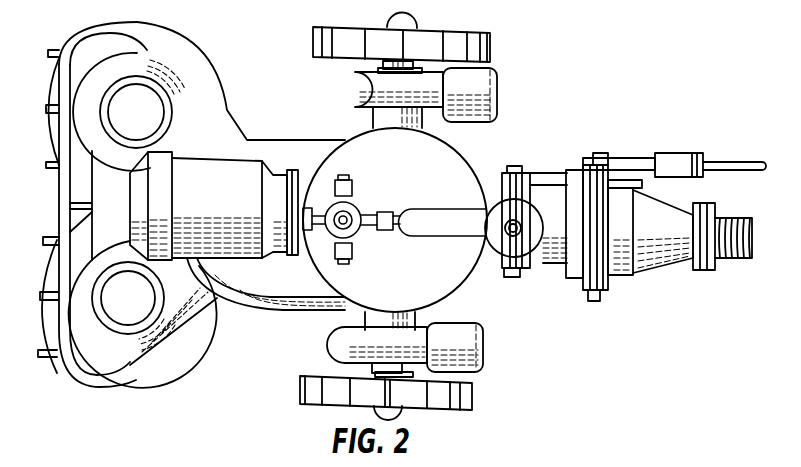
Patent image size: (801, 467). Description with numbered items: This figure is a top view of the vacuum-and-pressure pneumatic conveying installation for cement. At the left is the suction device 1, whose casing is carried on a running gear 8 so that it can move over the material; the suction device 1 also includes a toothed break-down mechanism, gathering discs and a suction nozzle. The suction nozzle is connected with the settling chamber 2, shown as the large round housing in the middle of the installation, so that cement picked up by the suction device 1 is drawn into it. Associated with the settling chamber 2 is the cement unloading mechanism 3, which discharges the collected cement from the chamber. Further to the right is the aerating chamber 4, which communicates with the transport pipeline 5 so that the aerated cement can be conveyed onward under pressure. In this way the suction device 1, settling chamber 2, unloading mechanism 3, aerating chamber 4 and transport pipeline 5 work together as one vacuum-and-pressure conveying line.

The suction device 1 is at (153, 101).
The settling chamber 2 is at (345, 153).
The cement unloading mechanism 3 is at (302, 178).
The aerating chamber 4 is at (663, 257).
The transport pipeline 5 is at (723, 247).
The running gear 8 is at (465, 49).